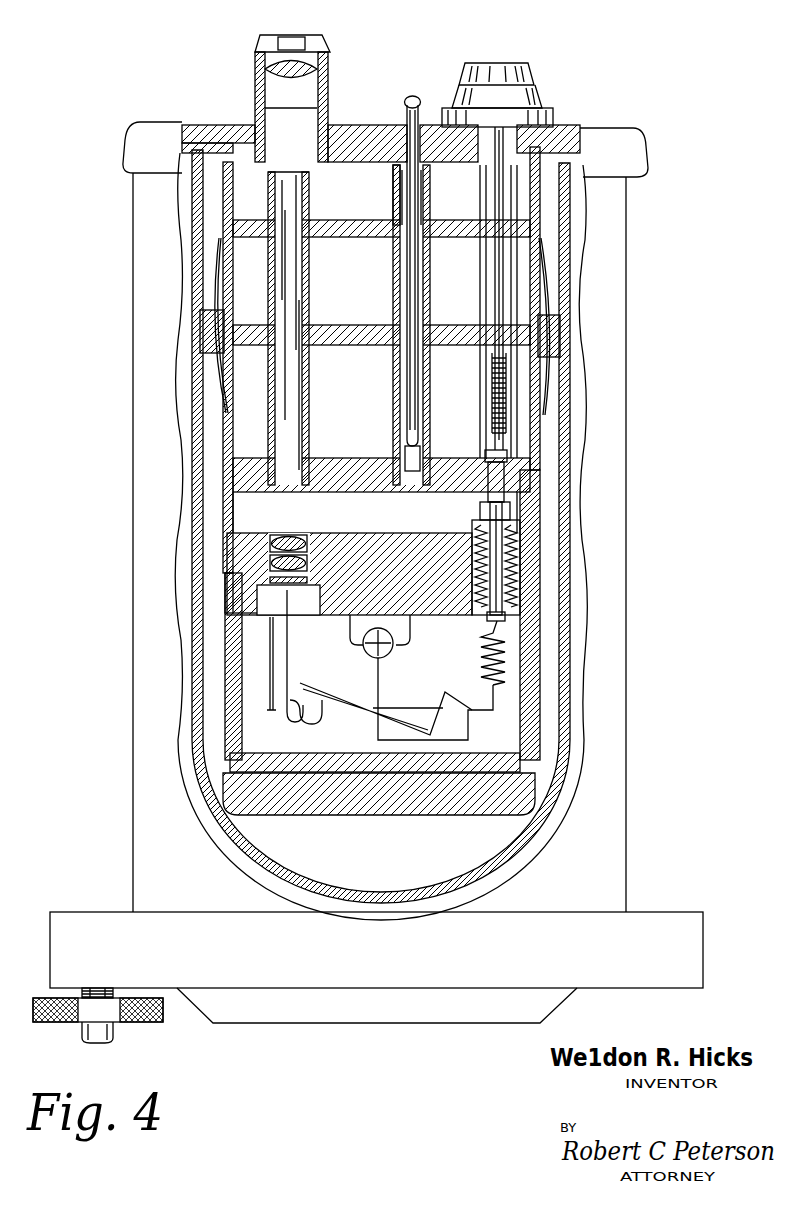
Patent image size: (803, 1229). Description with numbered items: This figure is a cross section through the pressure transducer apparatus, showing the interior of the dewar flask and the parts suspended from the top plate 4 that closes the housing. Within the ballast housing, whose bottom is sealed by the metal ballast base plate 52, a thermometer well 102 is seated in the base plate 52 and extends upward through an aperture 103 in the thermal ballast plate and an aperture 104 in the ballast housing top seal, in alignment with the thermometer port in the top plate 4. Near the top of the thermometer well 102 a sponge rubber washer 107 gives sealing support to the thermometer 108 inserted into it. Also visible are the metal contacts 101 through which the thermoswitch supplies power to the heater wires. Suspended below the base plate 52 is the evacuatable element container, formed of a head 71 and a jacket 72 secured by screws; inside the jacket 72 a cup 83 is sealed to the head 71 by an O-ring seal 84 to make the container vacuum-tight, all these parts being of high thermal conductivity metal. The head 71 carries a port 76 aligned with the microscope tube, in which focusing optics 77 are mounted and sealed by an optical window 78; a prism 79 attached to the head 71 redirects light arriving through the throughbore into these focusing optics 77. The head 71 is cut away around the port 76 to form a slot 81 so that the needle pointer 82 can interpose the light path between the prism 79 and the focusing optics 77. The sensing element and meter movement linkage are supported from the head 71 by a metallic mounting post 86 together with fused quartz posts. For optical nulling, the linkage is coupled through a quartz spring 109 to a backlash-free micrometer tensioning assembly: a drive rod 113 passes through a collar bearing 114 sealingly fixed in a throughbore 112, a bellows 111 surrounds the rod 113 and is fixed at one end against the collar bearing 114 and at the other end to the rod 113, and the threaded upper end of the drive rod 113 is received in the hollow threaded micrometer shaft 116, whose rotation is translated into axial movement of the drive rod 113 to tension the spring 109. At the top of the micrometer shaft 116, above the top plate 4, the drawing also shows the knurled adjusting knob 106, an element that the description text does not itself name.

The top plate 4 is at (228, 124).
The adjusting knob and stem 106 is at (444, 118).
The thermometer 108 is at (406, 104).
The sponge rubber washer 107 is at (423, 195).
The aperture in ballast housing top seal 104 is at (397, 215).
The thermometer well 102 is at (437, 262).
The metal contacts 101 is at (547, 288).
The aperture in thermal ballast plate 103 is at (429, 328).
The micrometer shaft 116 is at (492, 323).
The ballast base plate 52 is at (430, 468).
The drive rod 113 is at (487, 490).
The collar bearing 114 is at (512, 518).
The port 76 is at (291, 537).
The head 71 is at (387, 551).
The focusing optics 77 is at (307, 563).
The throughbore 112 is at (472, 558).
The optical window 78 is at (307, 581).
The bellows 111 is at (479, 582).
The slot 81 is at (267, 607).
The O-ring seal 84 is at (520, 617).
The prism 79 is at (305, 603).
The quartz spring 109 is at (480, 653).
The needle pointer 82 is at (289, 667).
The metallic mounting post 86 is at (270, 690).
The cup 83 is at (520, 700).
The jacket 72 is at (443, 797).